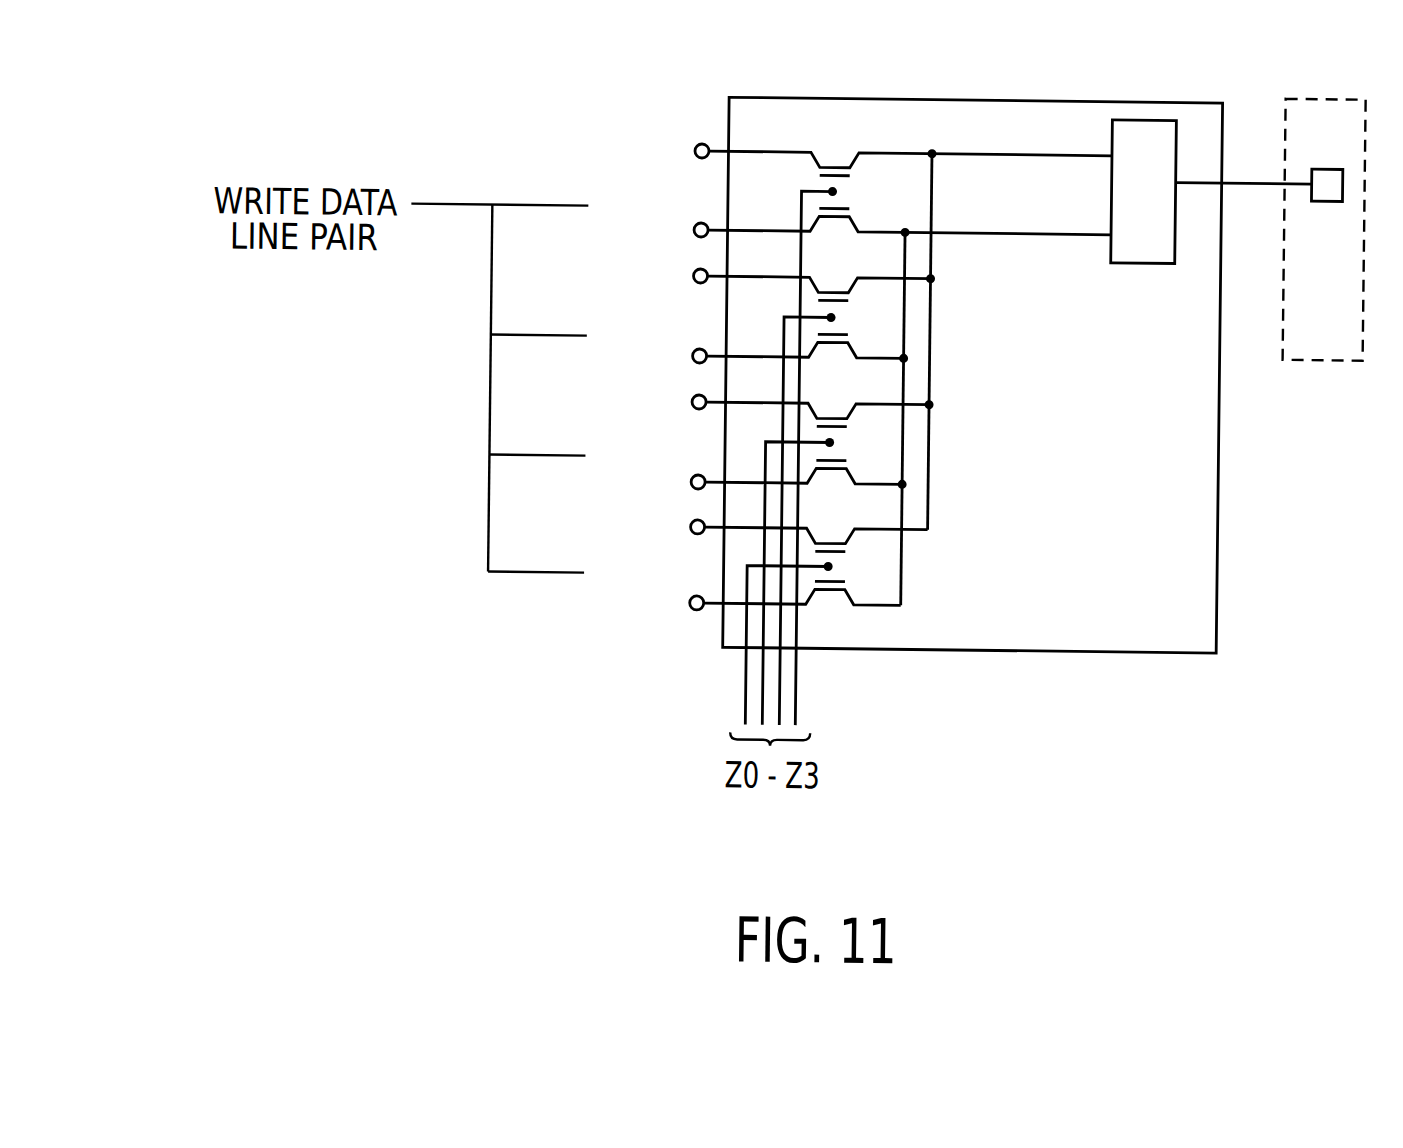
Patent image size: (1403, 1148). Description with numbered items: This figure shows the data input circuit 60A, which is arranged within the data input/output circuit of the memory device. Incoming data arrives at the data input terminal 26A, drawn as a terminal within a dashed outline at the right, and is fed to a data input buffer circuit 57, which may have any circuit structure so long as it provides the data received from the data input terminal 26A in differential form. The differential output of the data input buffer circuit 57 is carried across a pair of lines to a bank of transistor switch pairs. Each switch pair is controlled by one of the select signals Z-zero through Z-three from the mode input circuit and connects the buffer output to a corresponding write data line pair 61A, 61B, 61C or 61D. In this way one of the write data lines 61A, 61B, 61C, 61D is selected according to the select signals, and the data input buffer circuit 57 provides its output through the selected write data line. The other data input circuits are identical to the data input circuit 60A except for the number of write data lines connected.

The data input buffer circuit 57 is at (1156, 258).
The data input terminal 26A is at (1330, 358).
The data input circuit 60A is at (978, 647).
The write data line 61A is at (680, 132).
The write data line 61B is at (680, 257).
The write data line 61C is at (680, 385).
The write data line 61D is at (680, 512).